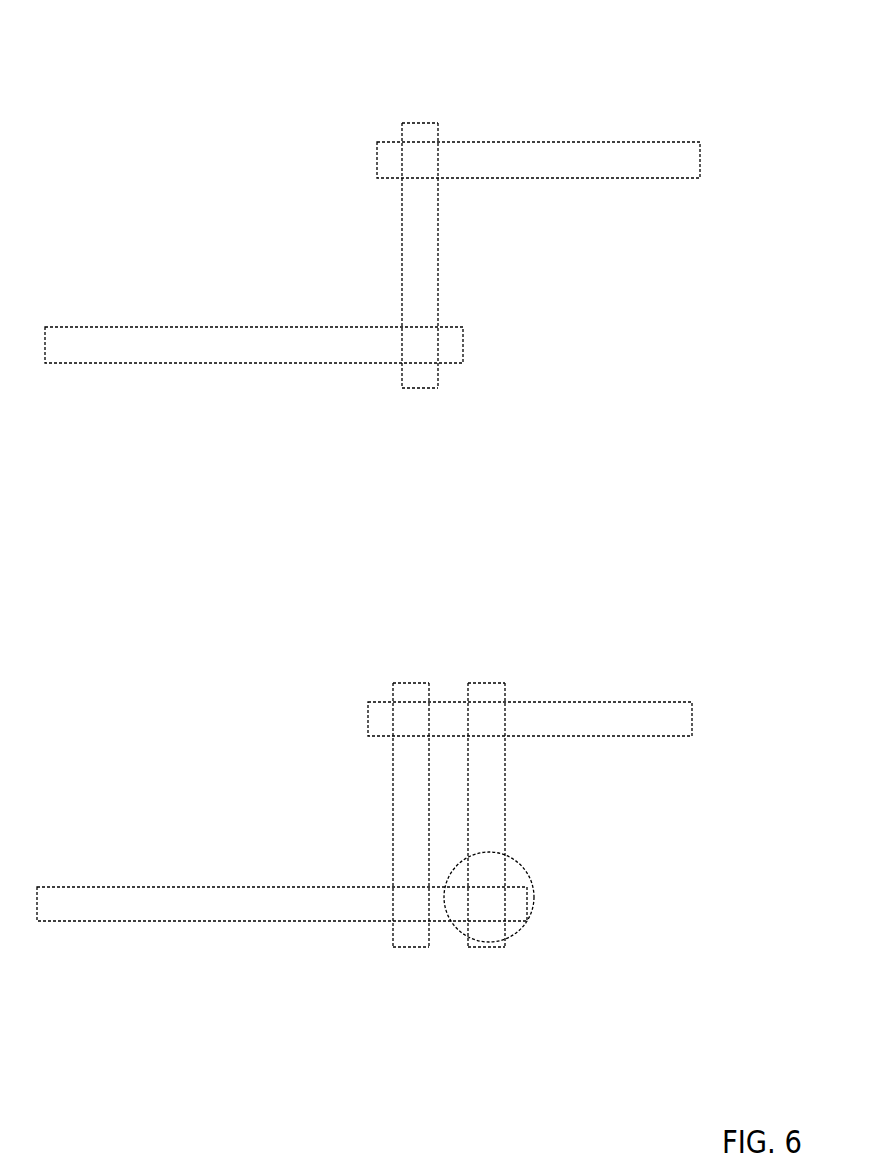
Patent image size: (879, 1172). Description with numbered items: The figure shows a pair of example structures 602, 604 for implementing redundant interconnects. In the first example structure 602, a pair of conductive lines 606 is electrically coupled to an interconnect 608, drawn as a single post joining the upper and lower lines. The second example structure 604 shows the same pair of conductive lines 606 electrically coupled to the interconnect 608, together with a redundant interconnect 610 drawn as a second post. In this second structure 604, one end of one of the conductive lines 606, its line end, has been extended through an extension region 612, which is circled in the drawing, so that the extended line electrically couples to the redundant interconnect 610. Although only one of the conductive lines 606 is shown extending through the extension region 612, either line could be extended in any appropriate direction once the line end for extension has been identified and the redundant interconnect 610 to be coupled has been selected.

The example structure 602 is at (738, 47).
The example structure 604 is at (393, 602).
The conductive lines 606 is at (283, 887).
The interconnect 608 is at (411, 947).
The redundant interconnect 610 is at (486, 947).
The extension region 612 is at (535, 899).